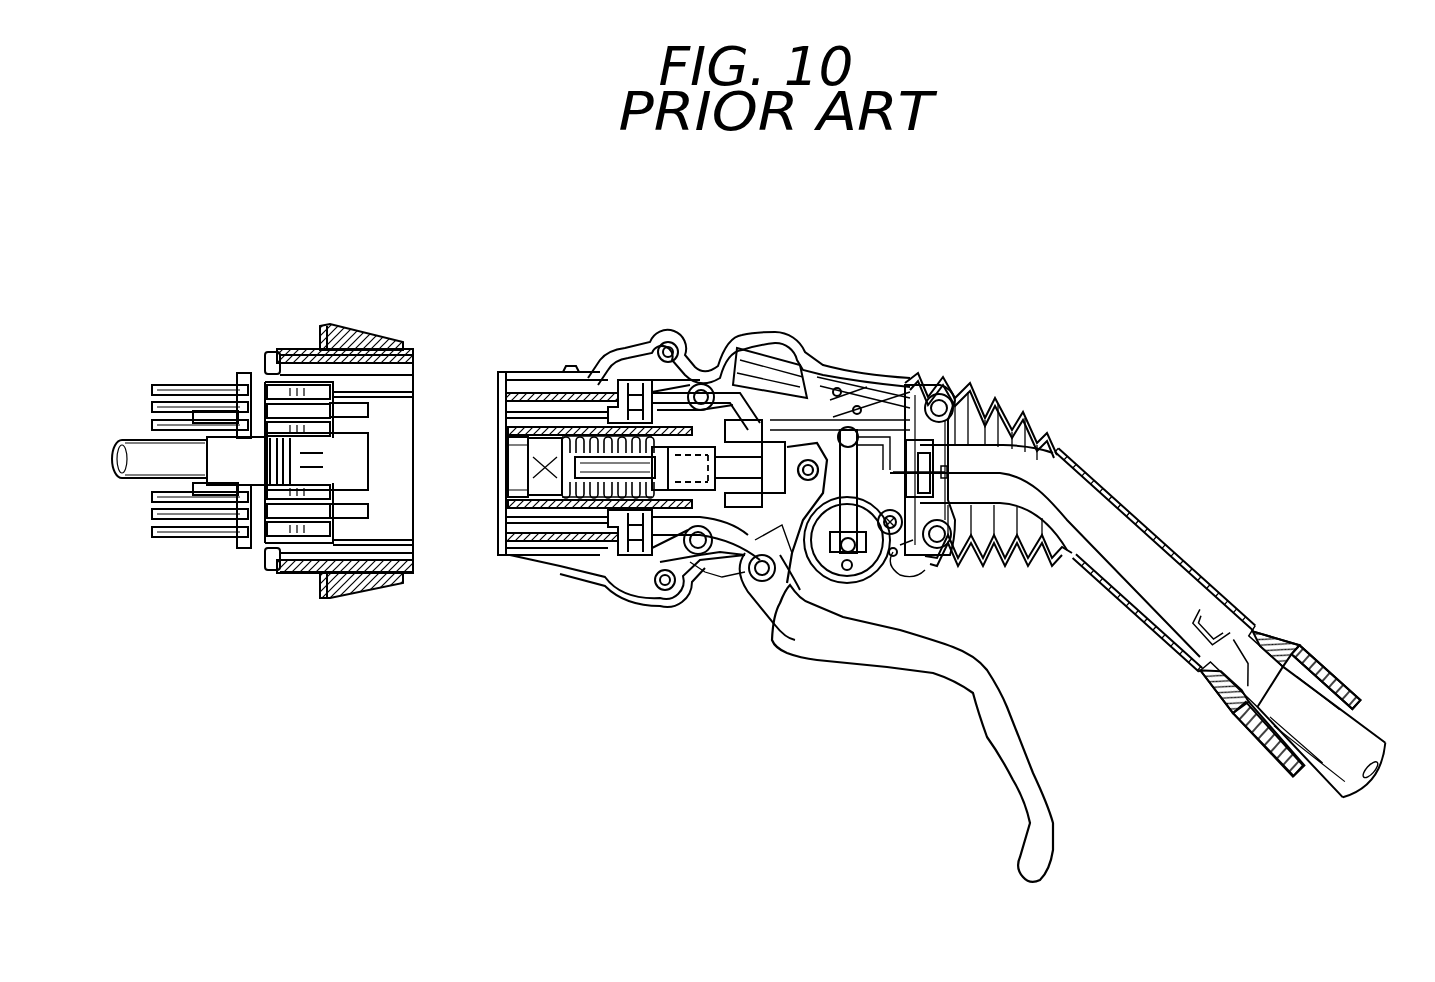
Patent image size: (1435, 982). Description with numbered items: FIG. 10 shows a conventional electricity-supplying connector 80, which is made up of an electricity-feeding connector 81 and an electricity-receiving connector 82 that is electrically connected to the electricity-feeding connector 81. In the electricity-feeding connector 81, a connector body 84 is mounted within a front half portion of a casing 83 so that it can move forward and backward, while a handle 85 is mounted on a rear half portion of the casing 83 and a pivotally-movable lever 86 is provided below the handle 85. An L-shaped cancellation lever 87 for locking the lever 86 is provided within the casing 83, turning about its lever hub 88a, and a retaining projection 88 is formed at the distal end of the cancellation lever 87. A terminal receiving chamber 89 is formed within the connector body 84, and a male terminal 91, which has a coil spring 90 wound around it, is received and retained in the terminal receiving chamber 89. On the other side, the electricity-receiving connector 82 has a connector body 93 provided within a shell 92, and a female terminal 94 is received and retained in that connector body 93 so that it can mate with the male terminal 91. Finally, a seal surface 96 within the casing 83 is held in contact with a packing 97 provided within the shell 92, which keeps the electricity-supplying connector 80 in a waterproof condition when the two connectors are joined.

The electricity-supplying connector 80 is at (348, 216).
The electricity-feeding connector 81 is at (665, 336).
The electricity-receiving connector 82 is at (358, 322).
The casing 83 is at (540, 370).
The connector body 84 is at (592, 502).
The handle 85 is at (1163, 545).
The pivotally-movable lever 86 is at (872, 672).
The cancellation lever 87 is at (893, 560).
The retaining projection 88 is at (768, 400).
The lever hub 88a is at (780, 632).
The terminal receiving chamber 89 is at (615, 522).
The coil spring 90 is at (647, 560).
The male terminal 91 is at (567, 495).
The shell 92 is at (296, 571).
The connector body 93 is at (340, 562).
The female terminal 94 is at (370, 451).
The seal surface 96 is at (517, 495).
The packing 97 is at (340, 478).